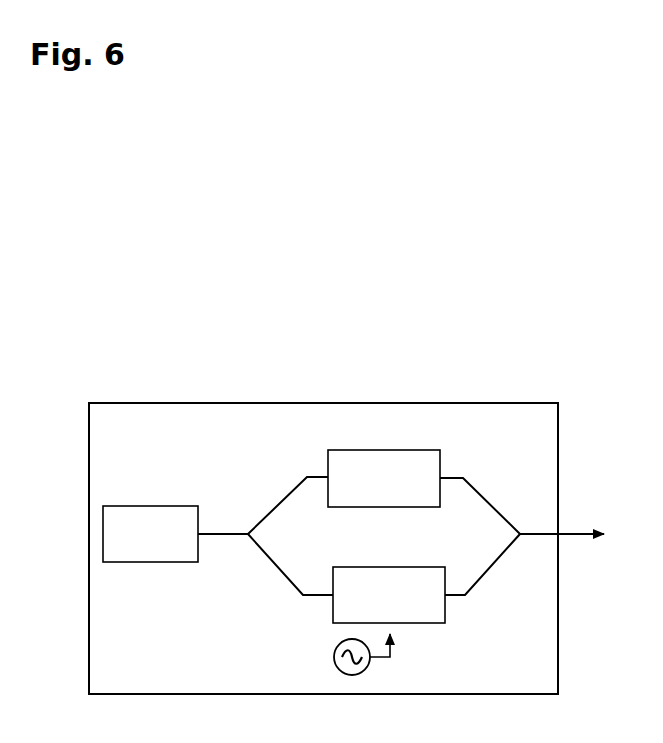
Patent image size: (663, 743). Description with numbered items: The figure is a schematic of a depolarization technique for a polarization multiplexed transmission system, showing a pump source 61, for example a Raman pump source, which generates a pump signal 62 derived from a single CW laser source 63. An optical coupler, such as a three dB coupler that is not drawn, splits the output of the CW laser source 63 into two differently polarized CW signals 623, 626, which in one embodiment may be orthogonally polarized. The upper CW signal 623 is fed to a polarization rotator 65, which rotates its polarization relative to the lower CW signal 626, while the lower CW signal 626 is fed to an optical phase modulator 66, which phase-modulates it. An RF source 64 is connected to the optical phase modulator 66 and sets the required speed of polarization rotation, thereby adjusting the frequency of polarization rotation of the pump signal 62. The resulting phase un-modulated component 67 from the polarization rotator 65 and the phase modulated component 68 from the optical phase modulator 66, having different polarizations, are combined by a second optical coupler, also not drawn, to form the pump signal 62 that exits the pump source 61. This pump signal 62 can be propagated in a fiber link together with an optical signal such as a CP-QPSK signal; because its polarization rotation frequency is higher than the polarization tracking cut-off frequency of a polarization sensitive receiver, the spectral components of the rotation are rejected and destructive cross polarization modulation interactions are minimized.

The pump source 61 is at (170, 403).
The pump signal 62 is at (596, 540).
The CW laser source 63 is at (133, 506).
The RF source 64 is at (365, 670).
The polarization rotator 65 is at (440, 450).
The optical phase modulator 66 is at (427, 567).
The phase un-modulated component 67 is at (508, 478).
The phase modulated component 68 is at (512, 597).
The CW signal 623 is at (277, 503).
The CW signal 626 is at (277, 570).